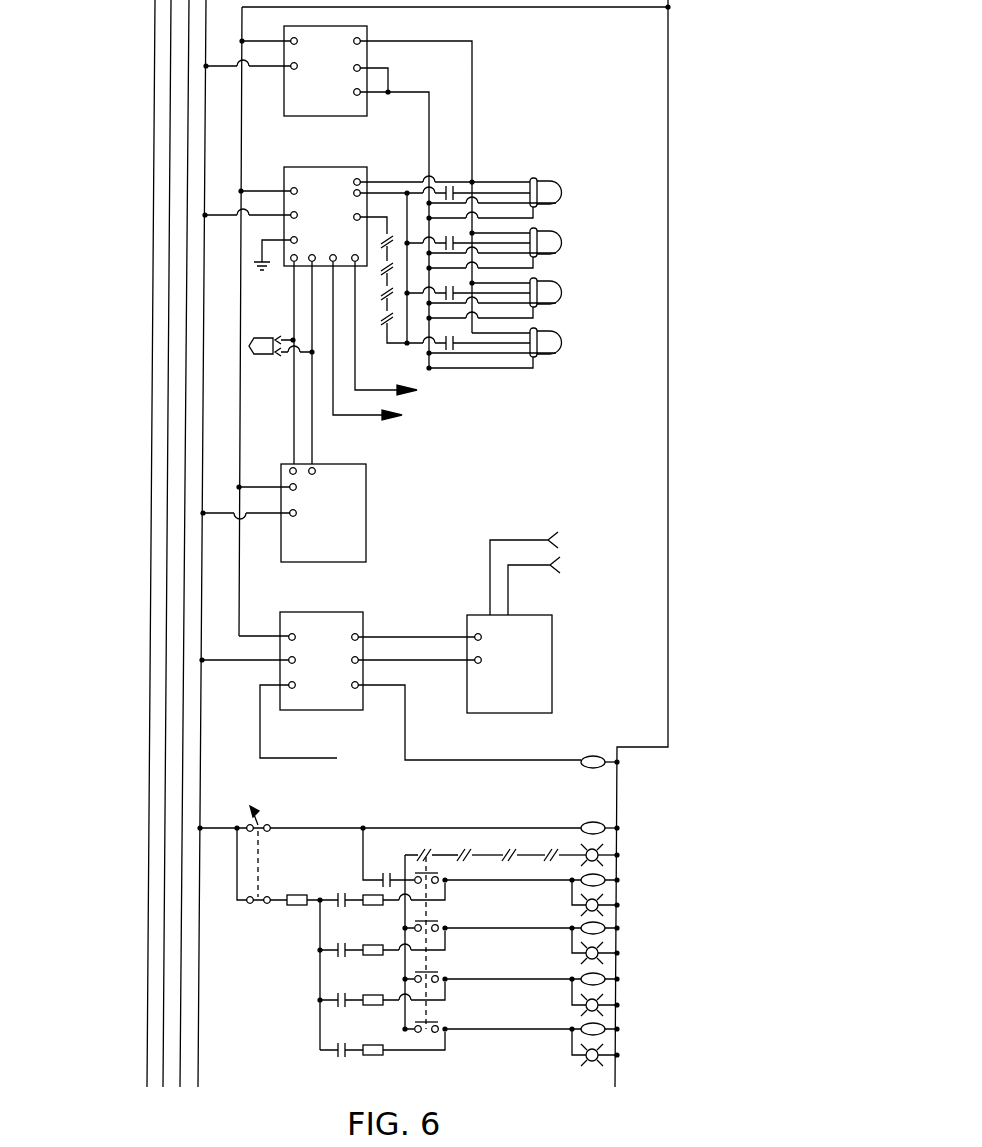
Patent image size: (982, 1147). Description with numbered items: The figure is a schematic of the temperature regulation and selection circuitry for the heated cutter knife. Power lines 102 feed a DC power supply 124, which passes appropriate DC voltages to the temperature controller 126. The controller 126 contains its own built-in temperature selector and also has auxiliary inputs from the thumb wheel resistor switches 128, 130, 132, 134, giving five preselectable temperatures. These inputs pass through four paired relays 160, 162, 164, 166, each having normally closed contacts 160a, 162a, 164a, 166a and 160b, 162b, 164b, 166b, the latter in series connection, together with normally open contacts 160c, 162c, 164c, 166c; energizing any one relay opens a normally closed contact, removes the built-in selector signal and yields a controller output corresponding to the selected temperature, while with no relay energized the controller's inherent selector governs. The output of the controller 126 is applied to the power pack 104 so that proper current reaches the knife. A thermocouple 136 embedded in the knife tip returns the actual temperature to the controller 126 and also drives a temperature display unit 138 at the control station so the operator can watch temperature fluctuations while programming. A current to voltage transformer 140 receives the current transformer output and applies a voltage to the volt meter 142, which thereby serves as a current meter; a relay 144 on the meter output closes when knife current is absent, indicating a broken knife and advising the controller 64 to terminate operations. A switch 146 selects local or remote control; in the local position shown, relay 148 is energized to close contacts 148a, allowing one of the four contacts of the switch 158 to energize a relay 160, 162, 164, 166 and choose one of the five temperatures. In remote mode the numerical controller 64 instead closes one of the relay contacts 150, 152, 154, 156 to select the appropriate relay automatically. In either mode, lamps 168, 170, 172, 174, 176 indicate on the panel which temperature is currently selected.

The power lines 102 is at (122, 42).
The DC power supply 124 is at (338, 91).
The temperature controller 126 is at (338, 231).
The thumb wheel resistor switch 128 is at (563, 186).
The thumb wheel resistor switch 130 is at (563, 236).
The thumb wheel resistor switch 132 is at (563, 286).
The thumb wheel resistor switch 134 is at (563, 336).
The thermocouple 136 is at (278, 306).
The temperature display unit 138 is at (336, 548).
The current to voltage transformer 140 is at (520, 680).
The volt meter 142 is at (336, 666).
The relay 144 is at (588, 759).
The switch 146 is at (289, 814).
The relay 148 is at (581, 822).
The contacts 148a is at (418, 862).
The relay contact 150 is at (334, 896).
The relay contact 152 is at (319, 952).
The relay contact 154 is at (319, 1010).
The relay contact 156 is at (319, 1061).
The switch 158 is at (450, 916).
The relay 160 is at (606, 879).
The relay 162 is at (606, 927).
The relay 164 is at (606, 978).
The relay 166 is at (606, 1028).
The normally closed contacts 160a is at (412, 838).
The normally closed contacts 162a is at (457, 838).
The normally closed contacts 164a is at (502, 838).
The normally closed contacts 166a is at (544, 838).
The normally closed contacts 160b is at (369, 296).
The normally closed contacts 162b is at (387, 274).
The normally closed contacts 164b is at (387, 299).
The normally closed contacts 166b is at (395, 329).
The normally open contacts 160c is at (446, 171).
The normally open contacts 162c is at (450, 243).
The normally open contacts 164c is at (450, 293).
The normally open contacts 166c is at (450, 343).
The lamp 168 is at (605, 862).
The lamp 170 is at (604, 905).
The lamp 172 is at (604, 953).
The lamp 174 is at (604, 1005).
The lamp 176 is at (604, 1055).
The power pack 104 is at (426, 347).
The controller 64 is at (347, 750).